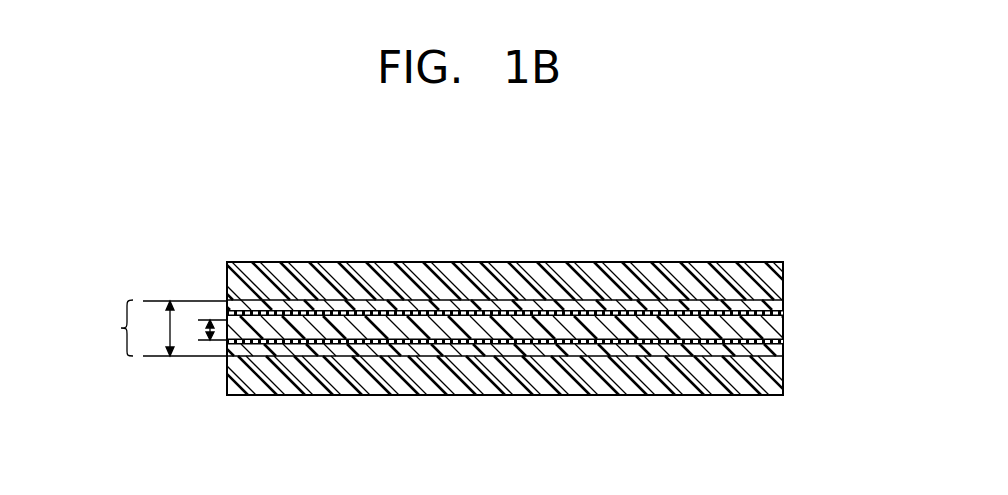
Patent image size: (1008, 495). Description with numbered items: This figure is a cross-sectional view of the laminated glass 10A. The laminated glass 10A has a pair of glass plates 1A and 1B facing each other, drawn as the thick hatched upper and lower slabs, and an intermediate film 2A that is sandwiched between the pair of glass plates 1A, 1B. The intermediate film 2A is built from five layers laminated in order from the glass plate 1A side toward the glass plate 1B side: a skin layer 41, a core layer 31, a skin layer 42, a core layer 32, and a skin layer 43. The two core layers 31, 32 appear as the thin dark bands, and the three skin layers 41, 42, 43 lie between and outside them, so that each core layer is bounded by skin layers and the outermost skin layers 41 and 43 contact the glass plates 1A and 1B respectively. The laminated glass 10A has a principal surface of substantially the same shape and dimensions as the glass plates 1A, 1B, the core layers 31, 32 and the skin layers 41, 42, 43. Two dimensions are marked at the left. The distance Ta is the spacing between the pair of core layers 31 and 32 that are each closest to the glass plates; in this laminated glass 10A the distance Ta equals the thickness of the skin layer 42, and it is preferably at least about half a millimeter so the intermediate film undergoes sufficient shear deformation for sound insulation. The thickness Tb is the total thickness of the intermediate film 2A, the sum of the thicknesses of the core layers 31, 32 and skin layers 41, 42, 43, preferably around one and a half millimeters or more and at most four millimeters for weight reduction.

The laminated glass 10A is at (583, 248).
The glass plate 1B is at (765, 262).
The glass plate 1A is at (738, 388).
The intermediate film 2A is at (152, 328).
The skin layer 43 is at (783, 302).
The core layer 32 is at (783, 313).
The skin layer 42 is at (783, 329).
The core layer 31 is at (783, 341).
The skin layer 41 is at (783, 354).
The thickness of the intermediate film Tb is at (156, 328).
The distance between the outermost core layers Ta is at (202, 328).